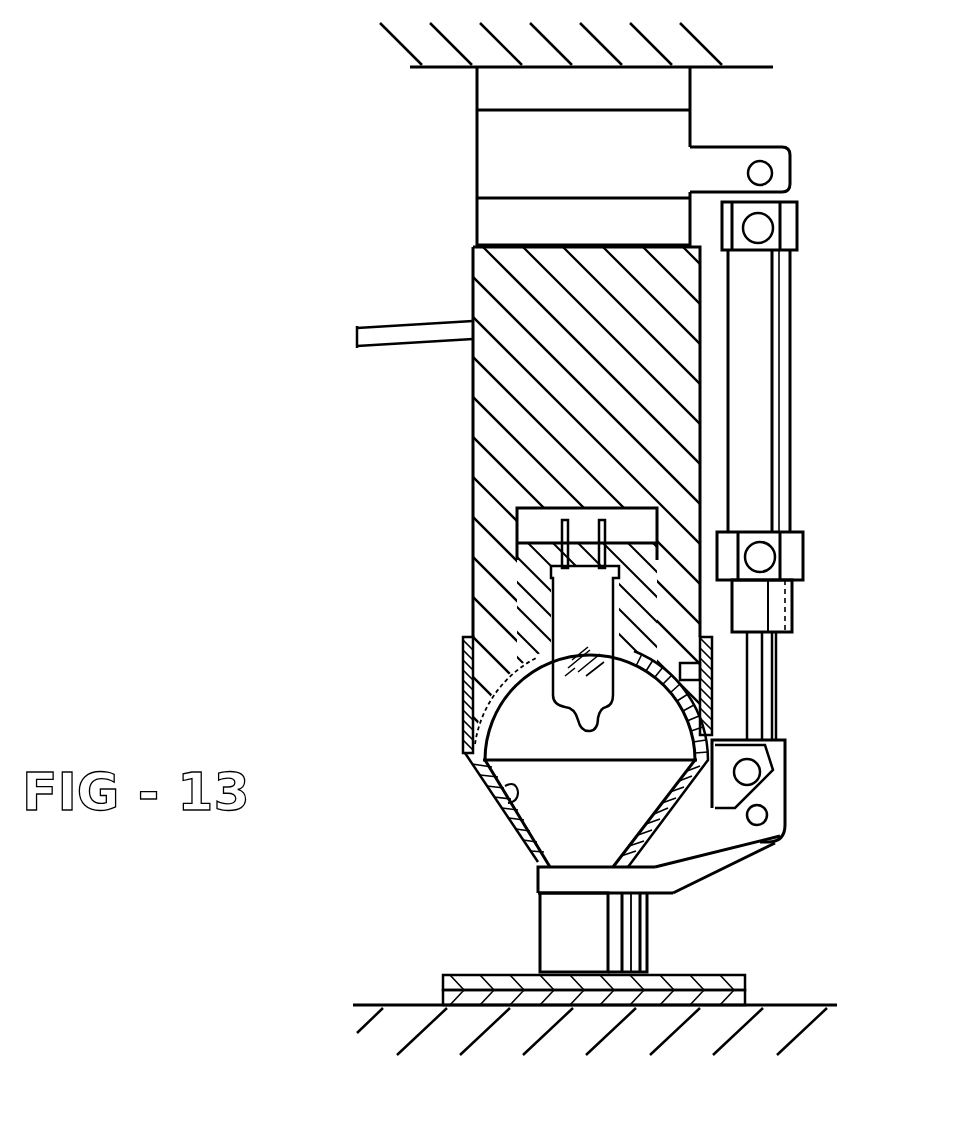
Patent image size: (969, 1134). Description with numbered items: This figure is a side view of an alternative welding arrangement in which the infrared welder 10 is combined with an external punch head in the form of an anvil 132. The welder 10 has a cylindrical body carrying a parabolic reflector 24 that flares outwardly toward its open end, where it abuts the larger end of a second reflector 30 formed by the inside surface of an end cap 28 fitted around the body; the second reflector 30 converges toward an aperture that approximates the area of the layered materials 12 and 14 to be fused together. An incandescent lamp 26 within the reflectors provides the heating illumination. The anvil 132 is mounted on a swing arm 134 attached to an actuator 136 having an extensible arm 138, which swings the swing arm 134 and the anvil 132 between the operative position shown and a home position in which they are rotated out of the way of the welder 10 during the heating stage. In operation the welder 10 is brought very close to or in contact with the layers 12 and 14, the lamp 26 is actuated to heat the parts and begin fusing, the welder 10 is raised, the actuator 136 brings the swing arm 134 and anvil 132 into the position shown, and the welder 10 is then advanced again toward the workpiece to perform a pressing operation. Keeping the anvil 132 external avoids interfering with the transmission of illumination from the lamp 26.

The welder 10 is at (466, 477).
The layered material 12 is at (443, 1000).
The layered material 14 is at (443, 982).
The parabolic reflector 24 is at (467, 660).
The incandescent lamp 26 is at (586, 613).
The end cap 28 is at (470, 756).
The second reflector 30 is at (492, 808).
The anvil 132 is at (540, 937).
The swing arm 134 is at (690, 880).
The actuator 136 is at (770, 405).
The extensible arm 138 is at (770, 693).